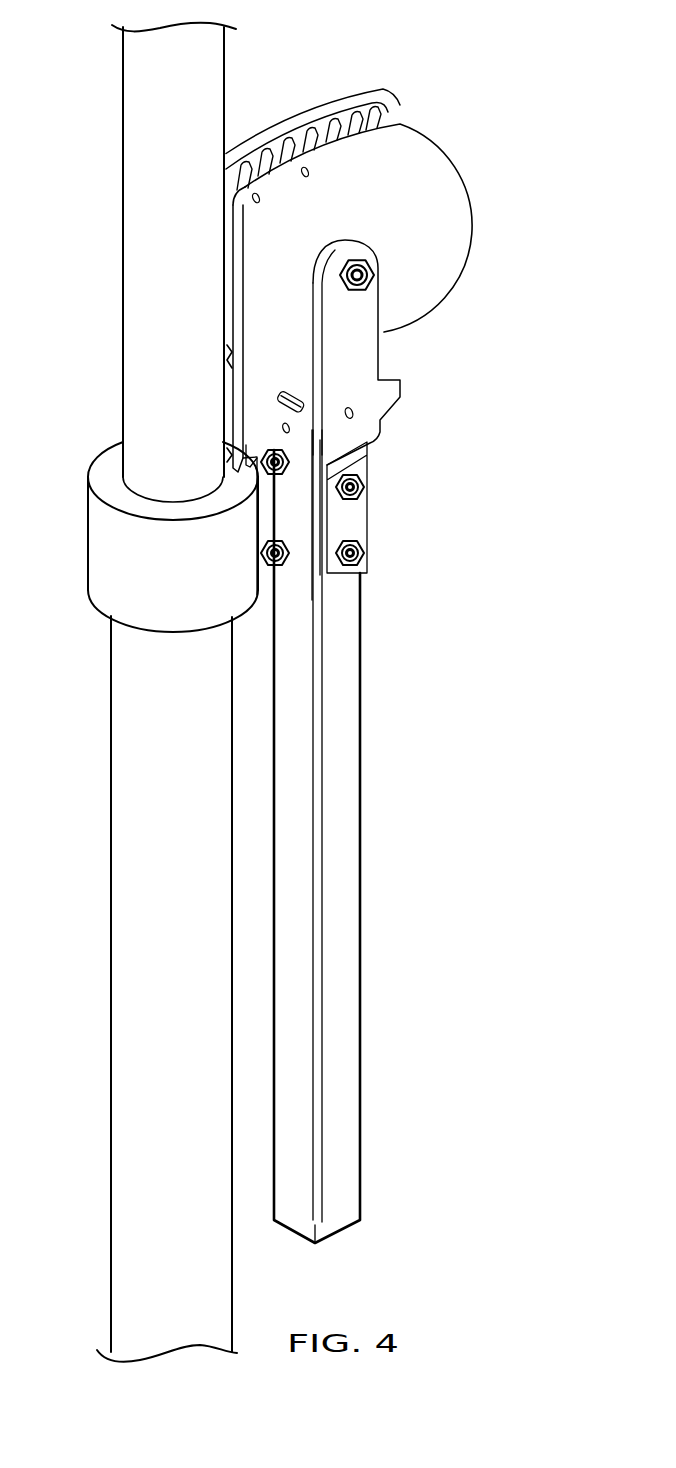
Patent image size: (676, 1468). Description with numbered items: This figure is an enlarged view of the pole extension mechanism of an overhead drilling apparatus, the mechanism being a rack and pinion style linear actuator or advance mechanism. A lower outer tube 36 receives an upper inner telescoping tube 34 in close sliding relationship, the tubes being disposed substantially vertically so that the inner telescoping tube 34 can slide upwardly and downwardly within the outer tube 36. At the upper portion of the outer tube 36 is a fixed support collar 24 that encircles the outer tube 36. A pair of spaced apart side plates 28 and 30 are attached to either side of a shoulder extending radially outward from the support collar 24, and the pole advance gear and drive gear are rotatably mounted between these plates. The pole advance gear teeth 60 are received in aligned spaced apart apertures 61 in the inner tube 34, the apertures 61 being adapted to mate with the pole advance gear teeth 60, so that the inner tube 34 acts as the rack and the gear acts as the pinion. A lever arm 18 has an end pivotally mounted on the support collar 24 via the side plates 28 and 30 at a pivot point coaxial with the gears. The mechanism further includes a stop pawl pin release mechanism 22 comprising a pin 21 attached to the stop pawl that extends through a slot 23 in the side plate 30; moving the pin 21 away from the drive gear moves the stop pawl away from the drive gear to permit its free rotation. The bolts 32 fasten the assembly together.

The lever arm 18 is at (348, 1152).
The pin 21 is at (303, 400).
The stop pawl pin release mechanism 22 is at (398, 452).
The slot 23 is at (285, 398).
The support collar 24 is at (108, 557).
The side plate 28 is at (260, 127).
The side plate 30 is at (433, 247).
The bolts 32 is at (290, 570).
The inner telescoping tube 34 is at (138, 145).
The outer tube 36 is at (128, 1107).
The pole advance gear teeth 60 is at (362, 103).
The apertures 61 is at (282, 427).